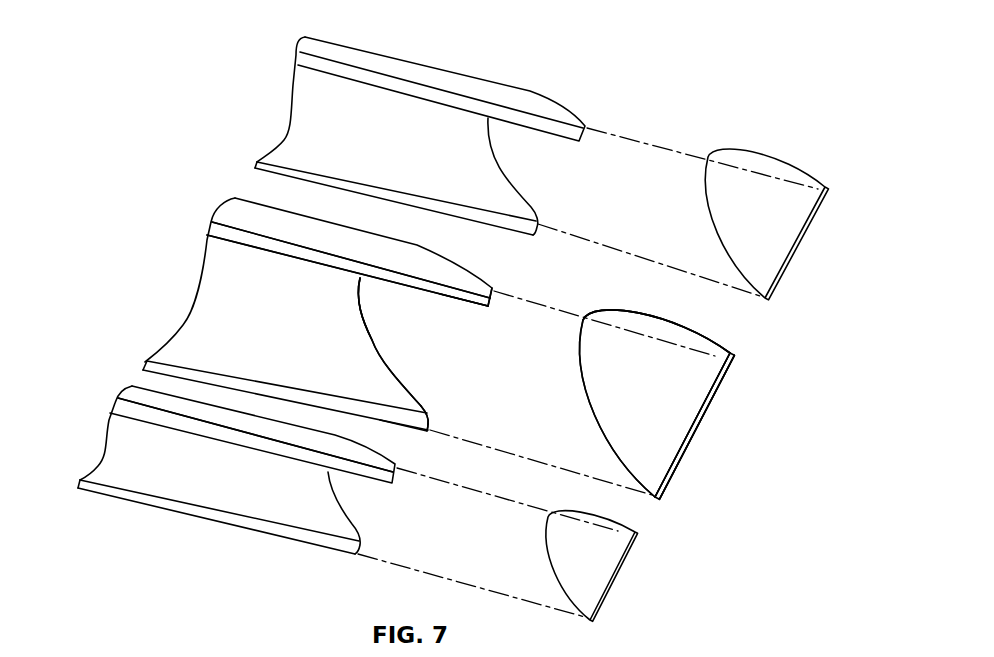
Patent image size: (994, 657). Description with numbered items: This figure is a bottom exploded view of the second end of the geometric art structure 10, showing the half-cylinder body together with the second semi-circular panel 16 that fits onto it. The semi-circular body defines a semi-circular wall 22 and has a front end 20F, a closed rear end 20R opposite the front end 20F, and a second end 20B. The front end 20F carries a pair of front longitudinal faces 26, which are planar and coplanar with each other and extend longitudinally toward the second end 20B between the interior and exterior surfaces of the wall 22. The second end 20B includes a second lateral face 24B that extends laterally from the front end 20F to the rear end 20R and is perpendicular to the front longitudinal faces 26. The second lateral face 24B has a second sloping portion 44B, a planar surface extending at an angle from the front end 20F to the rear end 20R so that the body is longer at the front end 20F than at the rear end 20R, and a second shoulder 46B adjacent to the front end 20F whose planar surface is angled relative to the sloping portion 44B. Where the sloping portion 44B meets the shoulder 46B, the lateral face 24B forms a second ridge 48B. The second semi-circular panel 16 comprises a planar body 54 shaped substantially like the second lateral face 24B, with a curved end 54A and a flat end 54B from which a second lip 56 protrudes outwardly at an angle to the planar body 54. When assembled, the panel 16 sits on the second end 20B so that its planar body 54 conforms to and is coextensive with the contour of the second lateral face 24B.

The air knife assembly 10 is at (742, 76).
The second semi-circular panel 16 is at (744, 427).
The closed rear end 20R is at (247, 178).
The front end 20F is at (225, 308).
The second end 20B is at (471, 366).
The semi-circular wall 22 is at (280, 252).
The second lateral face 24B is at (380, 357).
The pair of front longitudinal faces 26 is at (315, 262).
The second sloping portion 44B is at (360, 315).
The second shoulder 46B is at (491, 306).
The second ridge 48B is at (493, 286).
The planar body 54 is at (673, 337).
The curved end 54A is at (578, 332).
The flat end 54B is at (693, 416).
The second lip 56 is at (683, 450).